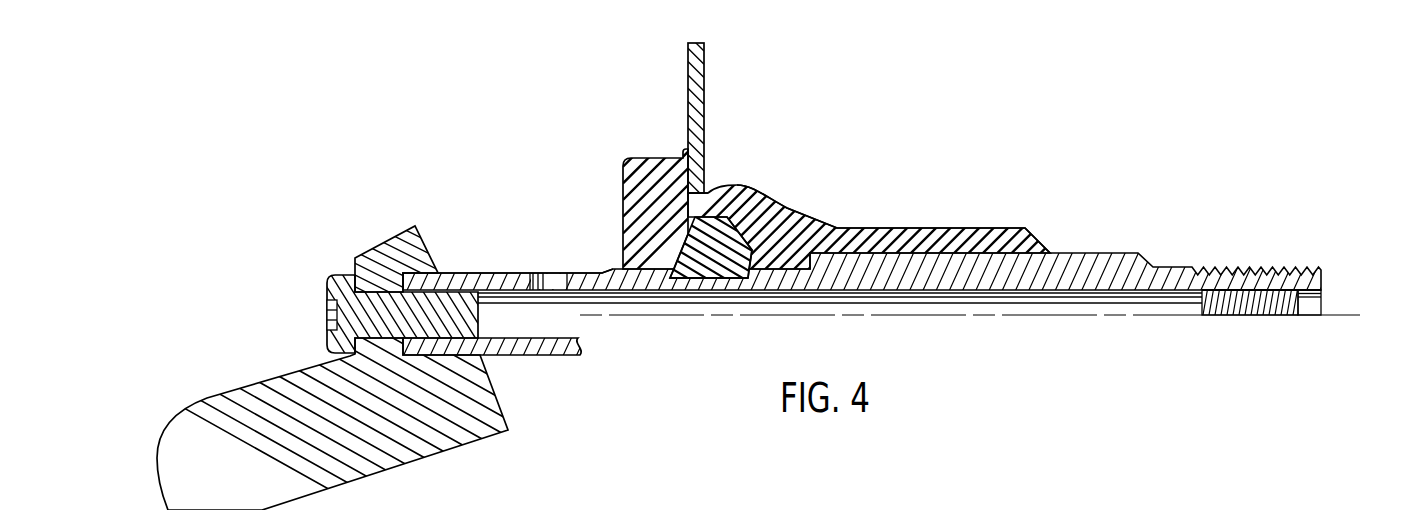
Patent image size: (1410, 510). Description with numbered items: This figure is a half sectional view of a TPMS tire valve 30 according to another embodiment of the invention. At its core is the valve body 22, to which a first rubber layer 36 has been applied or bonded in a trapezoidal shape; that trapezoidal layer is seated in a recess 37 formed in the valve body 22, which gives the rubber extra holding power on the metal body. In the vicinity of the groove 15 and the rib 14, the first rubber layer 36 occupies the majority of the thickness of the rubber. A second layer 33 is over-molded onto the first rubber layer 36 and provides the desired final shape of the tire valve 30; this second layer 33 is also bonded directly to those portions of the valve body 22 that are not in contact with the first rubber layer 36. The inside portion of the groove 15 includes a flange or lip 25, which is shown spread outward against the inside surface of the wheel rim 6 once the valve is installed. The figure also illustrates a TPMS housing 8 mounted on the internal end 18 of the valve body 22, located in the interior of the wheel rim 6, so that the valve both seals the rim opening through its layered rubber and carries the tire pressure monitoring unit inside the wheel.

The wheel rim 6 is at (705, 80).
The TPMS housing 8 is at (252, 393).
The rib 14 is at (735, 185).
The groove 15 is at (708, 190).
The internal end 18 is at (505, 271).
The valve body 22 is at (1118, 253).
The flange or lip 25 is at (682, 150).
The tire valve 30 is at (1035, 165).
The second layer 33 is at (787, 208).
The first rubber layer 36 is at (729, 248).
The recess 37 is at (703, 283).